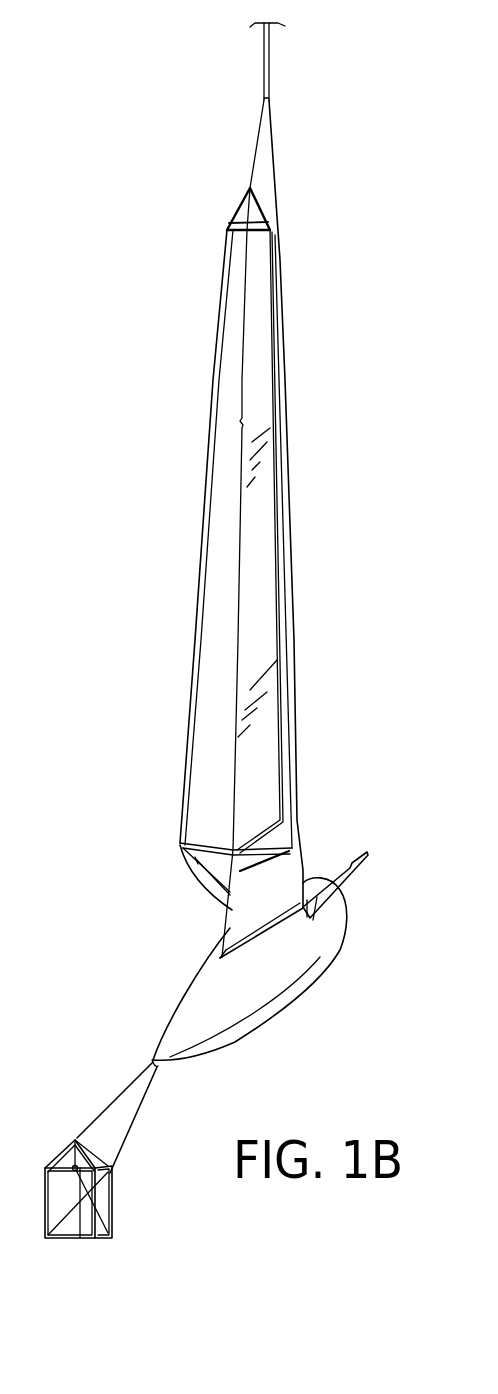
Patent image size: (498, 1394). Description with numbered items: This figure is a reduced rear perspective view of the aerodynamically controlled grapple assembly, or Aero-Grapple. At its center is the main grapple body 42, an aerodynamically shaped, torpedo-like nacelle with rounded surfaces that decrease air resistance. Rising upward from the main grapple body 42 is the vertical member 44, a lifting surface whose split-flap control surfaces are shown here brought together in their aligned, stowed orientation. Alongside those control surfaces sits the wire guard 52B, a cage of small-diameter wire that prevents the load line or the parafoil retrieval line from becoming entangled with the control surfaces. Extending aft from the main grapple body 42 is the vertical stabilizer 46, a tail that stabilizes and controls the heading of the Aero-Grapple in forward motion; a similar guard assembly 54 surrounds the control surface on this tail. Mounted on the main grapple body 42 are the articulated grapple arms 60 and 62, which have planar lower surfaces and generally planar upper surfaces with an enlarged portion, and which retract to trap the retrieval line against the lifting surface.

The wire guard 52B is at (278, 472).
The vertical member 44 is at (303, 873).
The grapple arm 62 is at (345, 878).
The main grapple body 42 is at (323, 955).
The grapple arm 60 is at (212, 888).
The vertical stabilizer 46 is at (118, 1142).
The guard assembly 54 is at (112, 1205).